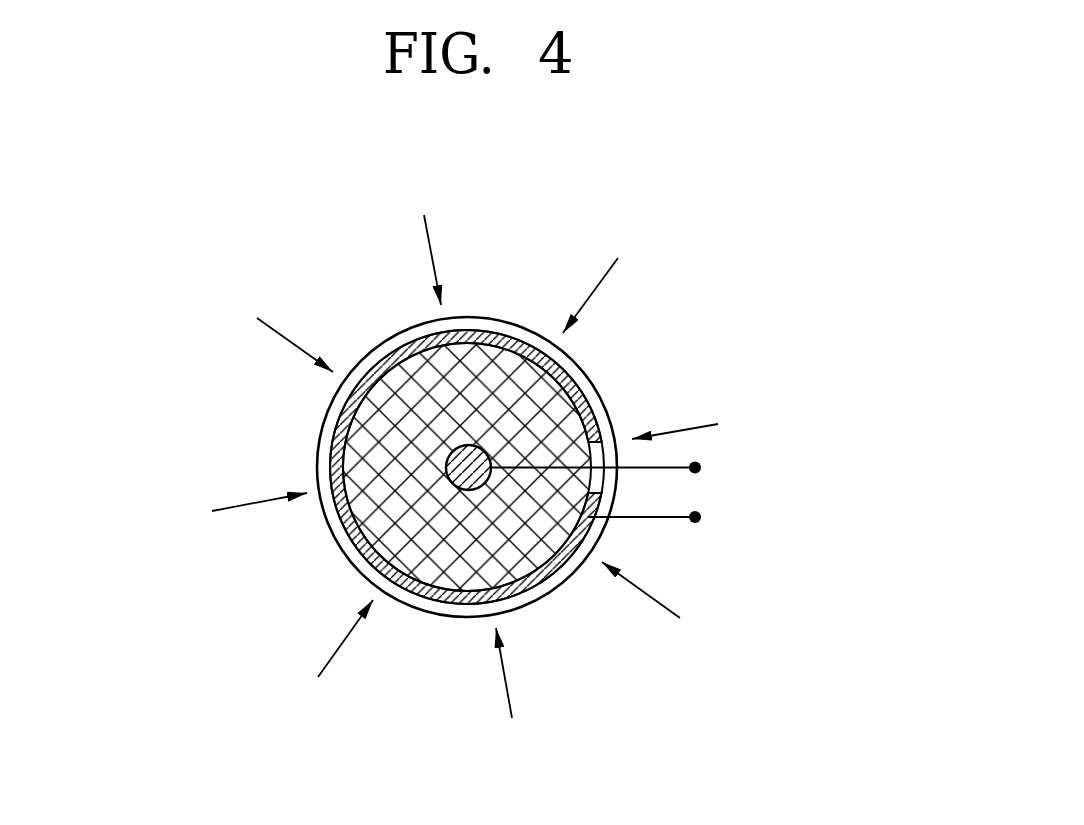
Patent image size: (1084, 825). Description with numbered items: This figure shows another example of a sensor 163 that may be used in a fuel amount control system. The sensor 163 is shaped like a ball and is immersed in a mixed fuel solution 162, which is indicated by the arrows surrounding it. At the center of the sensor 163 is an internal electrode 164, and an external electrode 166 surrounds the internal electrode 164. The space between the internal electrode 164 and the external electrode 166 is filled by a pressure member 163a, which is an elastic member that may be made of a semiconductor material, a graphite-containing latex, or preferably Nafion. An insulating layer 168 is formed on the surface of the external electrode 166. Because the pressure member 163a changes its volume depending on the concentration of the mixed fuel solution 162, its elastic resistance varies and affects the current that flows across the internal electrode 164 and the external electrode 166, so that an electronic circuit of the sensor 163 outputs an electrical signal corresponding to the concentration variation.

The mixed fuel solution 162 is at (370, 293).
The sensor 163 is at (720, 275).
The pressure member 163a is at (433, 555).
The internal electrode 164 is at (472, 470).
The external electrode 166 is at (590, 383).
The insulating layer 168 is at (487, 325).